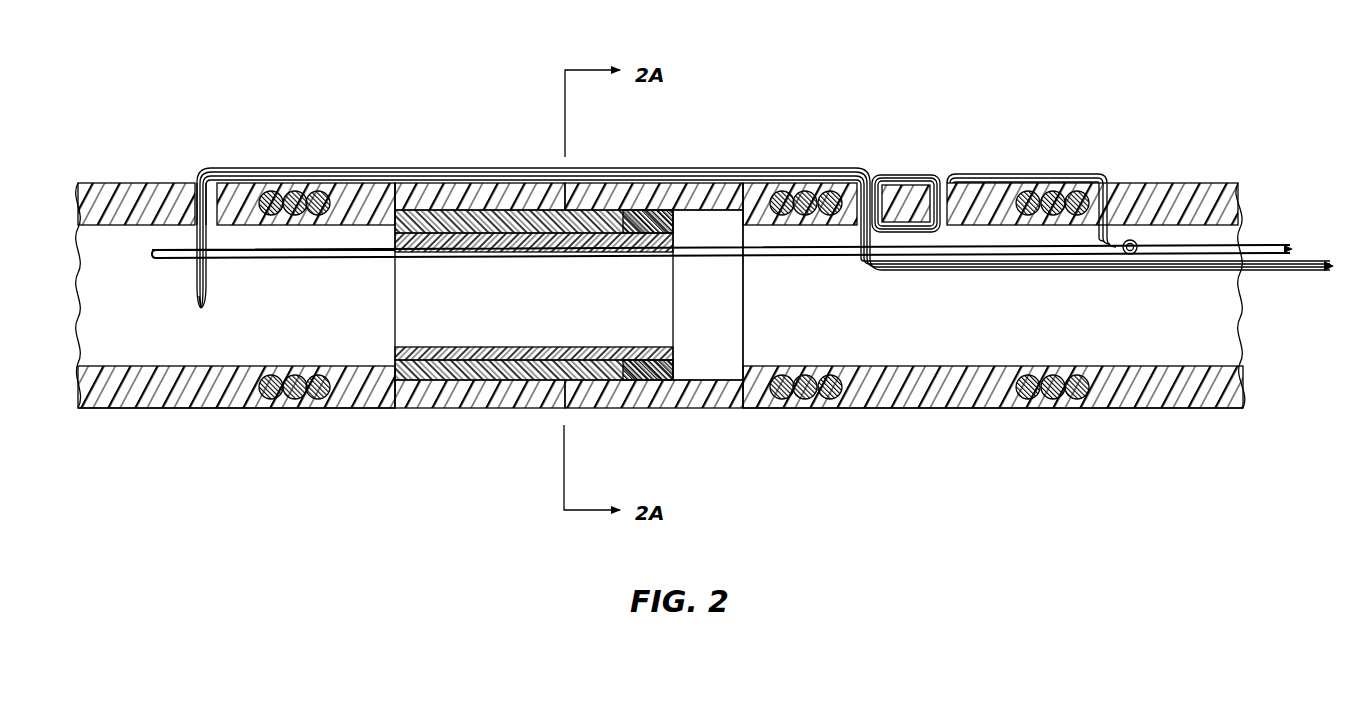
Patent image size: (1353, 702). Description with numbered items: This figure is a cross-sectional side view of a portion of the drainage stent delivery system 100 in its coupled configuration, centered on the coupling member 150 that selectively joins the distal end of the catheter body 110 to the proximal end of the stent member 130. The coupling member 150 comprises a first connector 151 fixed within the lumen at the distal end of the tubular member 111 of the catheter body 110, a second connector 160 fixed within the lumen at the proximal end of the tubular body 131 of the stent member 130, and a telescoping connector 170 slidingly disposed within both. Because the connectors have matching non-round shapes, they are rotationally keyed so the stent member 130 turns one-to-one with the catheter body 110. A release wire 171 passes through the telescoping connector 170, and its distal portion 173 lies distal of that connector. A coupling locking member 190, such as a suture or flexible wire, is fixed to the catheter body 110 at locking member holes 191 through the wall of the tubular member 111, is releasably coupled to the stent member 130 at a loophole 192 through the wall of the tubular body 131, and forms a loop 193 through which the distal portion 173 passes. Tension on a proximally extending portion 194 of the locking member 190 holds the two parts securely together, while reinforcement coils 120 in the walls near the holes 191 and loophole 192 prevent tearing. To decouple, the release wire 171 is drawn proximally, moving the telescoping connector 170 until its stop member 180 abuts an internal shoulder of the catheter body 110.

The drainage stent delivery system 100 is at (1130, 95).
The catheter body 110 is at (925, 410).
The tubular member 111 is at (1122, 410).
The reinforcement coils 120 is at (318, 408).
The stent member 130 is at (380, 410).
The tubular body 131 is at (192, 410).
The coupling member 150 is at (760, 127).
The first connector 151 is at (590, 217).
The second connector 160 is at (432, 222).
The telescoping connector 170 is at (655, 360).
The release wire 171 is at (1261, 244).
The distal portion 173 is at (340, 250).
The stop member 180 is at (630, 372).
The coupling locking member 190 is at (247, 172).
The locking member holes 191 is at (890, 182).
The loophole 192 is at (198, 183).
The loop 193 is at (198, 307).
The proximally extending portion 194 is at (1252, 268).